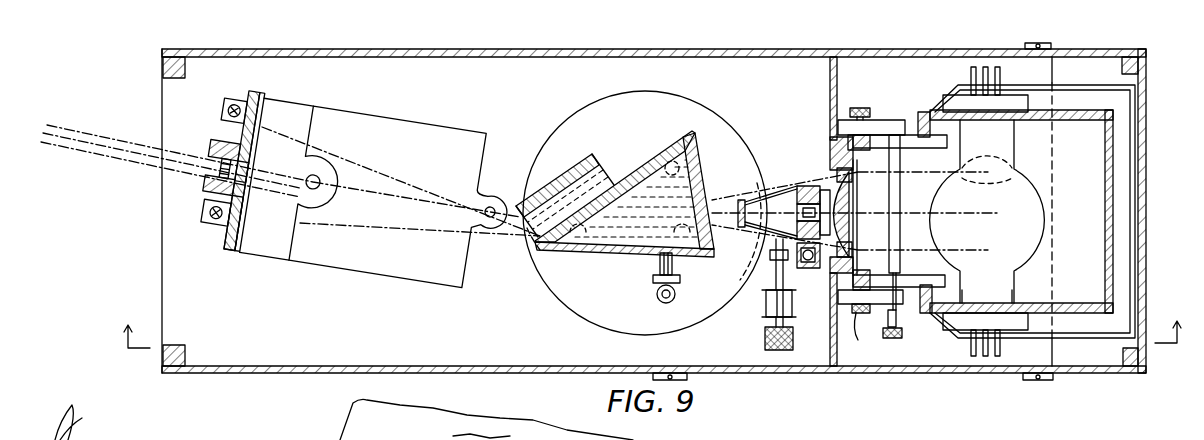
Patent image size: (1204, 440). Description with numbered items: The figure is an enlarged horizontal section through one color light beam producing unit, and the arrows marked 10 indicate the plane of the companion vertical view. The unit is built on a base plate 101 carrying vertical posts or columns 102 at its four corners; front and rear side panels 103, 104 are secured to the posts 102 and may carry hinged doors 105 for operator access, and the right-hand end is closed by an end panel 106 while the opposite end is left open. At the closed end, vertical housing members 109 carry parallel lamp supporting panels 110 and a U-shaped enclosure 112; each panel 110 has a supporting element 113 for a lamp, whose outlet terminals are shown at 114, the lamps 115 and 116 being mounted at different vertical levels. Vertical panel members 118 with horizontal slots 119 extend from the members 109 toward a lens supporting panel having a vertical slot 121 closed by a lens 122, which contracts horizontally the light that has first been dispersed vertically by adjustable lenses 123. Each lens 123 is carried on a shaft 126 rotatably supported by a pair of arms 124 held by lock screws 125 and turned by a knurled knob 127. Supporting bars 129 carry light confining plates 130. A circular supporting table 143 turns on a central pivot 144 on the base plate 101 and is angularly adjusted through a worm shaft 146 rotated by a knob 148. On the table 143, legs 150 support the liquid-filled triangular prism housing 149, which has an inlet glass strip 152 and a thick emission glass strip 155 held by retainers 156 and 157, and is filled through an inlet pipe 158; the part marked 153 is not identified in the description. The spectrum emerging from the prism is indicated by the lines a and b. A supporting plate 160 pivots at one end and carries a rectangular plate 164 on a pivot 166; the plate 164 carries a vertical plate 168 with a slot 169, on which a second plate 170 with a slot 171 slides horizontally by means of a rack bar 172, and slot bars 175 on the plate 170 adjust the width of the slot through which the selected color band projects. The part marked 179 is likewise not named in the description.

The section line 10- 10 is at (648, 325).
The base plate 101 is at (348, 320).
The vertical posts 102 is at (185, 78).
The front side panel 103 is at (508, 366).
The rear side panel 104 is at (540, 57).
The hinged doors 105 is at (950, 49).
The end panel 106 is at (1146, 165).
The vertical housing members 109 is at (922, 112).
The lamp supporting panels 110 is at (1040, 118).
The U-shaped enclosure 112 is at (1105, 247).
The supporting element for the lamp 113 is at (1028, 102).
The outlet terminals 114 is at (1000, 354).
The lamp 115 is at (1012, 292).
The lamp 116 is at (1012, 132).
The vertical panel members 118 is at (872, 258).
The horizontally extending slots 119 is at (905, 146).
The vertically extending slot 121 is at (852, 185).
The lens 122 is at (850, 208).
The adjustable lenses 123 is at (908, 228).
The arms 124 is at (858, 313).
The lock screws 125 is at (866, 331).
The shaft 126 is at (903, 276).
The knurled knob 127 is at (892, 340).
The supporting bars 129 is at (830, 142).
The light confining plates 130 is at (832, 356).
The circular supporting table 143 is at (548, 282).
The central pivot 144 is at (648, 248).
The shaft 146 is at (773, 280).
The knob 148 is at (765, 338).
The prism housing 149 is at (708, 146).
The legs 150 is at (668, 150).
The inlet glass strip 152 is at (746, 238).
The lens holder 153 is at (724, 174).
The emission glass strip 155 is at (556, 188).
The retainer 156 is at (610, 172).
The retainer 157 is at (496, 195).
The inlet pipe 158 is at (676, 294).
The supporting plate 160 is at (395, 122).
The rectangular plate 164 is at (280, 140).
The pivot 166 is at (318, 208).
The vertically extending plate 168 is at (244, 272).
The vertically extending slot 169 is at (250, 198).
The second plate 170 is at (247, 130).
The vertically extending slot 171 is at (244, 224).
The horizontal rack bar 172 is at (462, 432).
The slot bars 175 is at (205, 189).
The clamp screw 179 is at (210, 262).
The spectrum line a is at (425, 178).
The spectrum line b is at (418, 224).